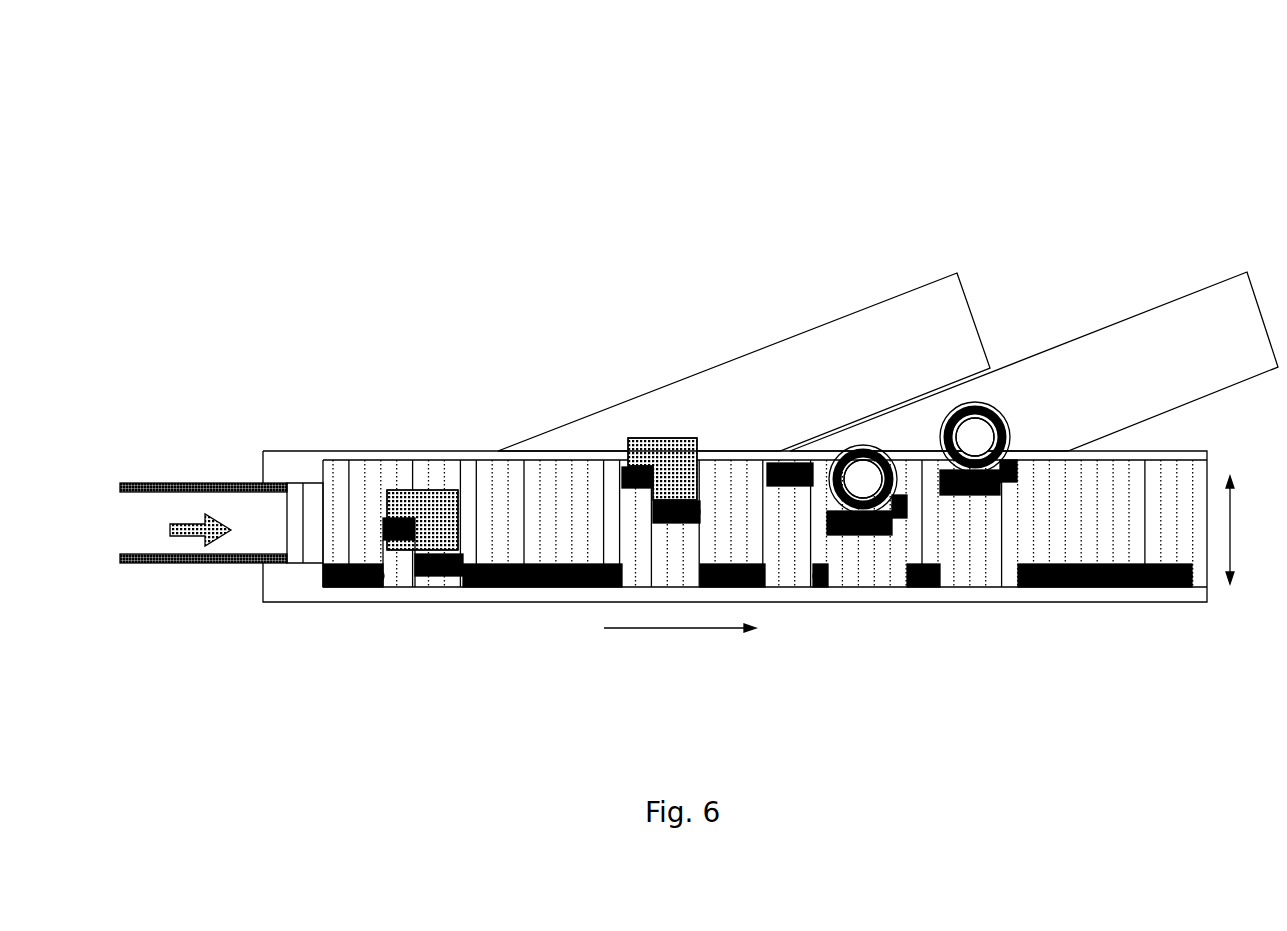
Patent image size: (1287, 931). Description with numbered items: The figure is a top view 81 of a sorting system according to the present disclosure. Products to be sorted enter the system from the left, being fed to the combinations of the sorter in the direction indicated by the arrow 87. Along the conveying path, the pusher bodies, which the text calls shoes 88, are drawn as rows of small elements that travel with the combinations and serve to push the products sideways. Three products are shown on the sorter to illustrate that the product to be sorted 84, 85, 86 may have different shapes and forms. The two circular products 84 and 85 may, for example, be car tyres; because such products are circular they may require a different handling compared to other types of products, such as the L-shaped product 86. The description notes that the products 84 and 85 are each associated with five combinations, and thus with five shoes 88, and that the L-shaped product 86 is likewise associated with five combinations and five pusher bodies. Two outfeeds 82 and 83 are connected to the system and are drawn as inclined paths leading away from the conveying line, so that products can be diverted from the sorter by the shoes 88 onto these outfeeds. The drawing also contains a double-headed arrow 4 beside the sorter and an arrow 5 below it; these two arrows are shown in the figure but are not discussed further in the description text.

The top view 81 is at (1095, 149).
The outfeed 82 is at (773, 403).
The outfeed 83 is at (1100, 365).
The product to be sorted 84 is at (952, 407).
The product to be sorted 85 is at (842, 449).
The L-shaped product 86 is at (650, 460).
The arrow 87 is at (178, 528).
The shoes 88 is at (537, 588).
The height direction 4 is at (1241, 530).
The conveying direction 5 is at (680, 645).